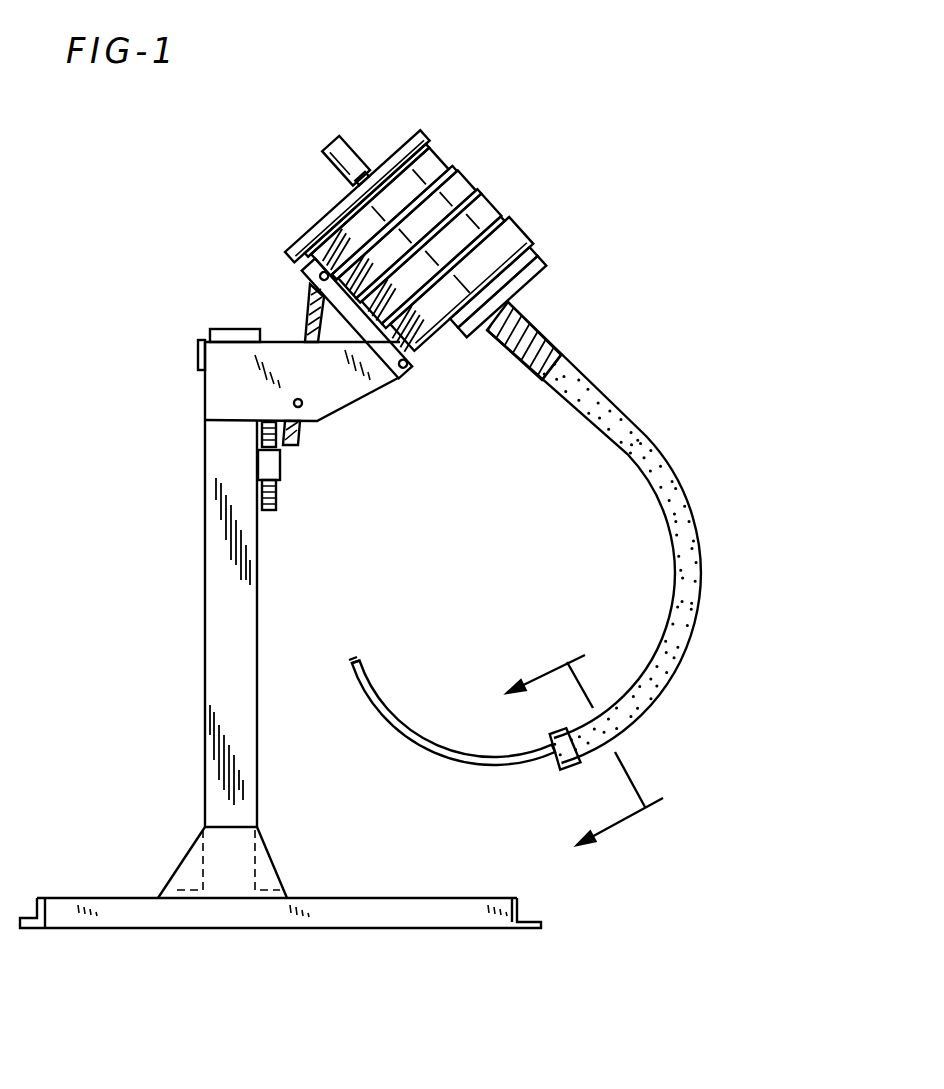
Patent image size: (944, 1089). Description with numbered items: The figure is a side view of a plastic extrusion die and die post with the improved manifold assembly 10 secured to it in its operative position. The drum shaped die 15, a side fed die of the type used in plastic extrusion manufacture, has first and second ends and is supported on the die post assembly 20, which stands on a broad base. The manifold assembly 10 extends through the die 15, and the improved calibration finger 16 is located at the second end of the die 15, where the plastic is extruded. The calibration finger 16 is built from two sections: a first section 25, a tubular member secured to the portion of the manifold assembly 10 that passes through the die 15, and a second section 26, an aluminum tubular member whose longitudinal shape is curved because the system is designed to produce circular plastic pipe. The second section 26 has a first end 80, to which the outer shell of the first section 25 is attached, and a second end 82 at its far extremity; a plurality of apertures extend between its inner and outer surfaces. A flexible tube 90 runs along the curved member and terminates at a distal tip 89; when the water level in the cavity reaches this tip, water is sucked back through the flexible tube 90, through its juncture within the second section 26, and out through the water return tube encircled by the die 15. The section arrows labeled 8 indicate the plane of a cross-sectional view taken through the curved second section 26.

The section line 8- 8 is at (601, 738).
The manifold assembly 10 is at (597, 370).
The die 15 is at (521, 222).
The calibration finger 16 is at (581, 331).
The die post assembly 20 is at (205, 672).
The first section 25 is at (538, 322).
The second section 26 is at (702, 523).
The first end 80 is at (560, 403).
The second end 82 is at (554, 752).
The distal tip 89 is at (350, 661).
The flexible tube 90 is at (452, 752).